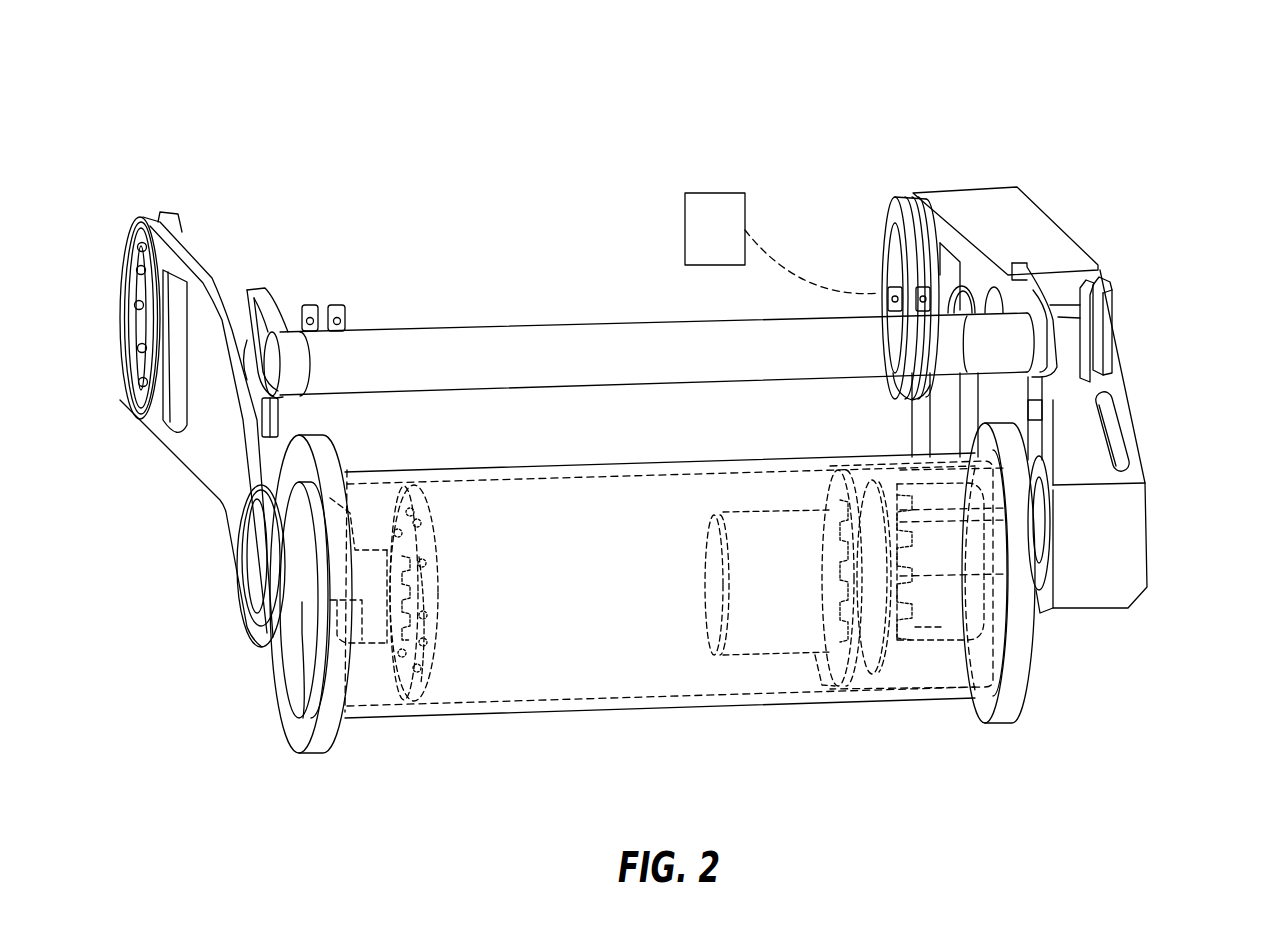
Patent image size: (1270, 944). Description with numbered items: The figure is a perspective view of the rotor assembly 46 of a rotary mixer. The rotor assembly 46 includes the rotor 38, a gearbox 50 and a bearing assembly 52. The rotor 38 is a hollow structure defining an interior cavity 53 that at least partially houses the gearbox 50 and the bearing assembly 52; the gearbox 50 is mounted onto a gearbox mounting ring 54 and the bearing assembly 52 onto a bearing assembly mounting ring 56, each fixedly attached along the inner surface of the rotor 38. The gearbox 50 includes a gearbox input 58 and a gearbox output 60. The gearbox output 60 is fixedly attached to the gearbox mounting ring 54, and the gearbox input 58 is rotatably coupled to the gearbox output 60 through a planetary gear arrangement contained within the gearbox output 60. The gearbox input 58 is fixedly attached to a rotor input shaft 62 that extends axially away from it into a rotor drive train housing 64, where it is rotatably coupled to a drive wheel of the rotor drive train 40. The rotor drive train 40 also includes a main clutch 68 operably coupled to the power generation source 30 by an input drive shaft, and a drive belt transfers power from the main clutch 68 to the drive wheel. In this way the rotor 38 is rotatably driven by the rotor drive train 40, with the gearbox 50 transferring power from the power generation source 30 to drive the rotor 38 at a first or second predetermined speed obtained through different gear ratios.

The power generation source 30 is at (715, 229).
The rotor 38 is at (541, 716).
The rotor drive train 40 is at (1093, 215).
The rotor assembly 46 is at (607, 140).
The gearbox 50 is at (905, 655).
The bearing assembly 52 is at (376, 655).
The interior cavity 53 is at (637, 663).
The gearbox mounting ring 54 is at (832, 673).
The bearing assembly mounting ring 56 is at (413, 683).
The gearbox input 58 is at (940, 613).
The gearbox output 60 is at (765, 528).
The rotor input shaft 62 is at (973, 448).
The rotor drive train housing 64 is at (1130, 505).
The main clutch 68 is at (895, 220).